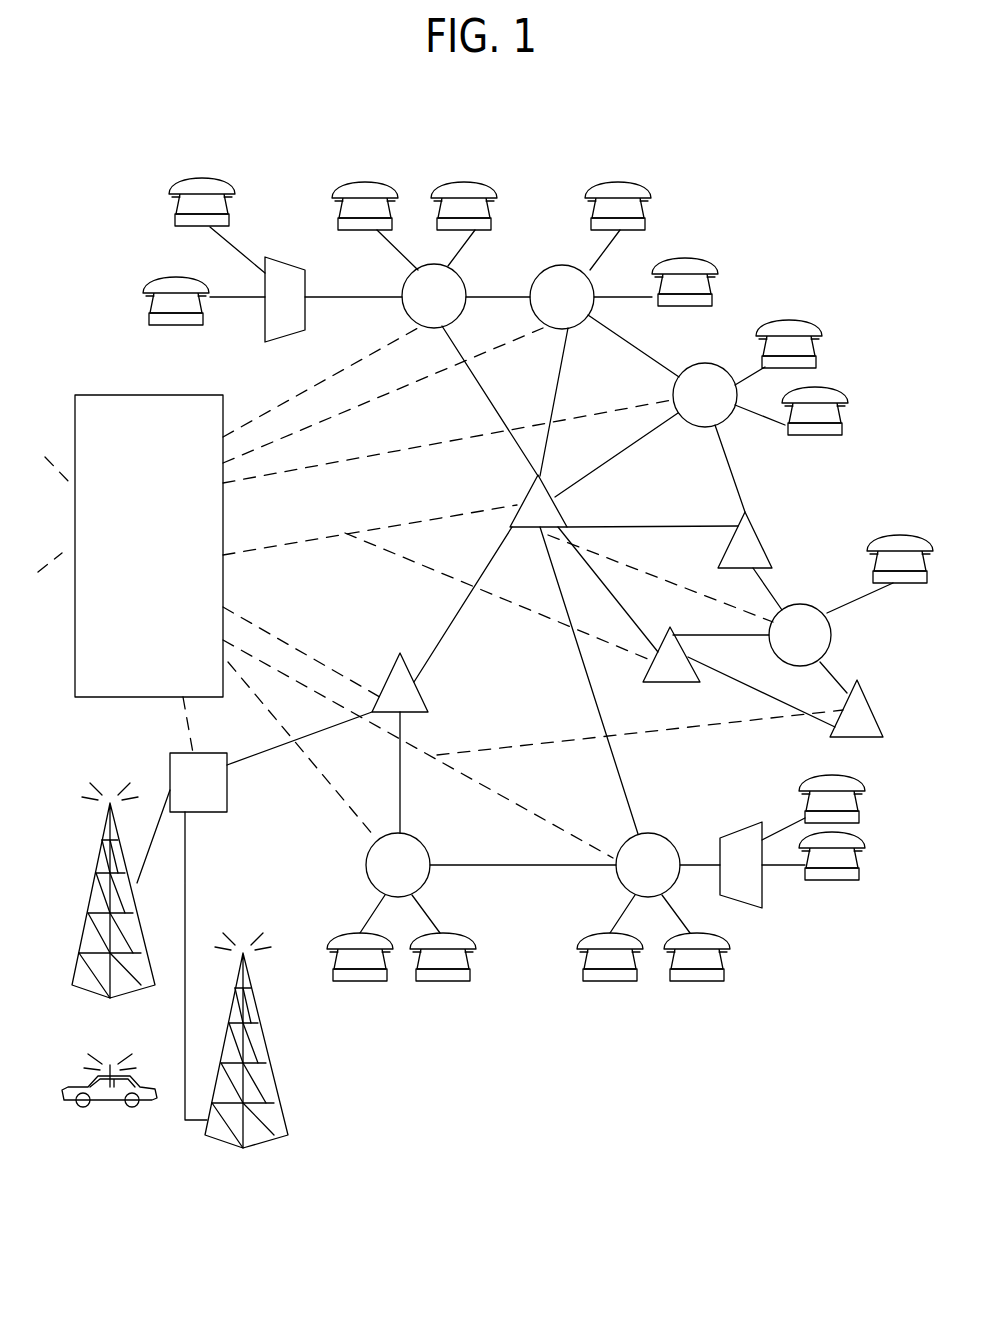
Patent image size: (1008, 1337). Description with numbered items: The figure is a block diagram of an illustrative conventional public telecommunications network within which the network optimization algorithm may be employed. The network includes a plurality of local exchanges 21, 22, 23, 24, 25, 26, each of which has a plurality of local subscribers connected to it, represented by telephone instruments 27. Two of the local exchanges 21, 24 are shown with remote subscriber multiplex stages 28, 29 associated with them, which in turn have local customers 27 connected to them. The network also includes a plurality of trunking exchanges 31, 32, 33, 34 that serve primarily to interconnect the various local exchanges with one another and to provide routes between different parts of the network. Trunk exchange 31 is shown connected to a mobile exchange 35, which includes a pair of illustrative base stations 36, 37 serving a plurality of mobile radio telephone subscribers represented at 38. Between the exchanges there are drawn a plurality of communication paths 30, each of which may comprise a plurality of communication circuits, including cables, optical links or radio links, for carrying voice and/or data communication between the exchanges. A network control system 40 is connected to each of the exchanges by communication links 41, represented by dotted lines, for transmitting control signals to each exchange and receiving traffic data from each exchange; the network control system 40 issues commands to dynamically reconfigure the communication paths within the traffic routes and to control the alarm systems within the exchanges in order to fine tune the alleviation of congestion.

The local exchange 21 is at (470, 283).
The local exchange 22 is at (549, 268).
The local exchange 23 is at (701, 428).
The local exchange 24 is at (620, 884).
The local exchange 25 is at (430, 878).
The local exchange 26 is at (832, 626).
The telephone instrument 27 is at (220, 178).
The remote subscriber multiplex stage 28 is at (265, 312).
The remote subscriber multiplex stage 29 is at (762, 885).
The communication path 30 is at (363, 297).
The trunking exchange 31 is at (418, 690).
The trunking exchange 32 is at (525, 493).
The trunking exchange 33 is at (690, 655).
The trunking exchange 34 is at (760, 545).
The mobile exchange 35 is at (227, 785).
The base station 36 is at (100, 893).
The base station 37 is at (265, 1022).
The mobile radio telephone subscribers 38 is at (108, 1104).
The network control system 40 is at (163, 395).
The communication link 41 is at (322, 382).